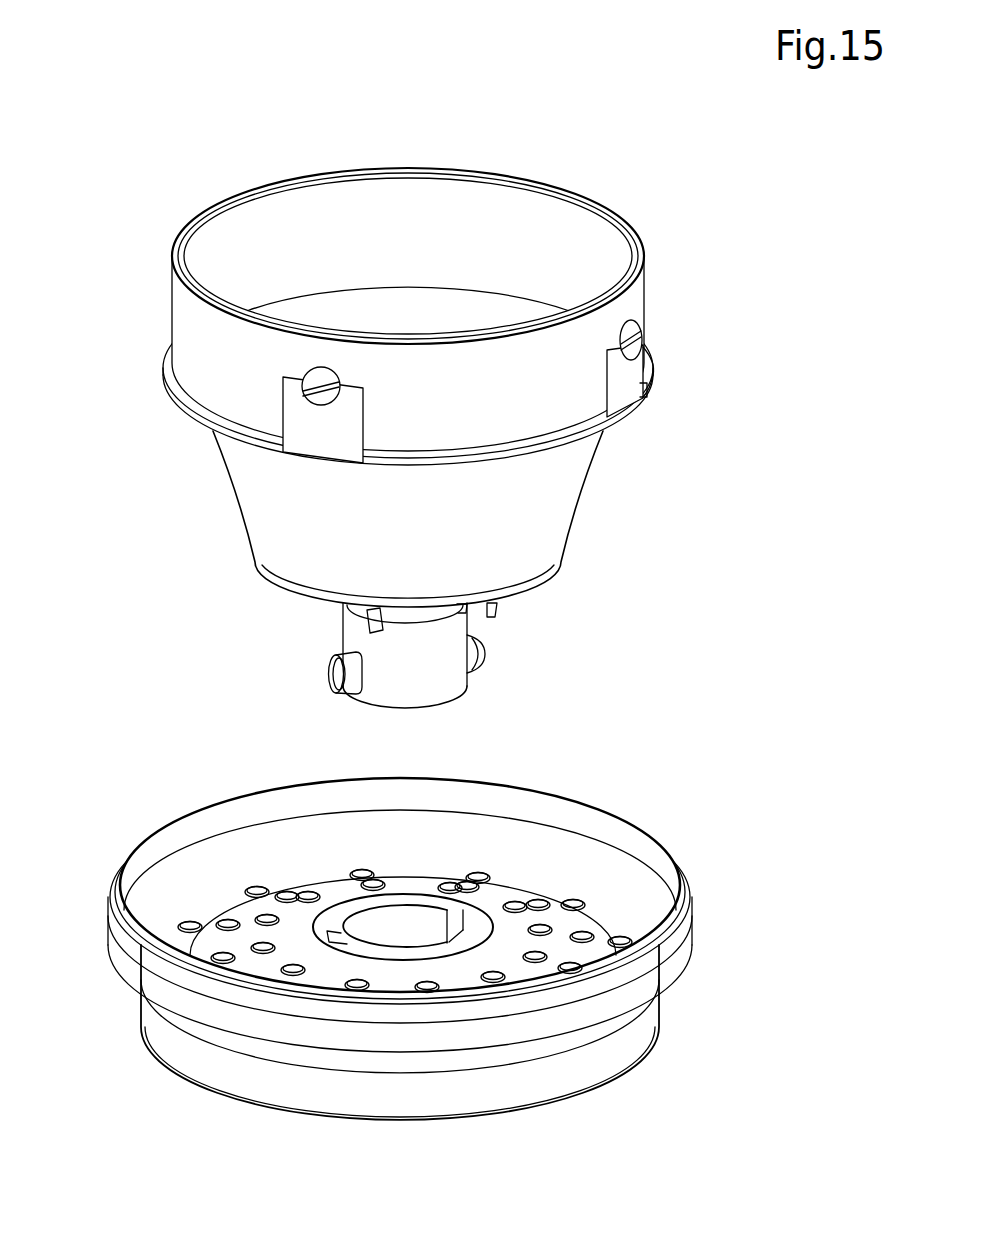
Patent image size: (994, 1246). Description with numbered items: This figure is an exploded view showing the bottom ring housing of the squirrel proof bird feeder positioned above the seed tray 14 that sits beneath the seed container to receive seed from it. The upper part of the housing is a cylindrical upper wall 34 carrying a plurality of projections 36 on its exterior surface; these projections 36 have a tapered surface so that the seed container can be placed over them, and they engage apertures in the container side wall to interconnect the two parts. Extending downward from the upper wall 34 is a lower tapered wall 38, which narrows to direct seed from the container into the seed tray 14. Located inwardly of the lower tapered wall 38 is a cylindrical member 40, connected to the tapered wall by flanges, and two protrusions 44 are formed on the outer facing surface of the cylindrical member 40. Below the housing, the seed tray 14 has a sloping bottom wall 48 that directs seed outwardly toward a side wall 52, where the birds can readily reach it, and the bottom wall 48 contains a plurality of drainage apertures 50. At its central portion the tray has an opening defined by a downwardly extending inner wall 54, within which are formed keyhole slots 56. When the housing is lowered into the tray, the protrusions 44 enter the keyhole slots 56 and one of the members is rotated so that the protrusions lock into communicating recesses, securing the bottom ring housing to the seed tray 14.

The seed tray 14 is at (677, 805).
The upper wall 34 is at (504, 409).
The projections 36 is at (642, 332).
The lower tapered wall 38 is at (476, 541).
The cylindrical member 40 is at (415, 668).
The protrusions 44 is at (483, 650).
The sloping bottom wall 48 is at (493, 896).
The drainage apertures 50 is at (302, 890).
The side wall 52 is at (690, 900).
The inner wall 54 is at (403, 917).
The keyhole slots 56 is at (480, 913).